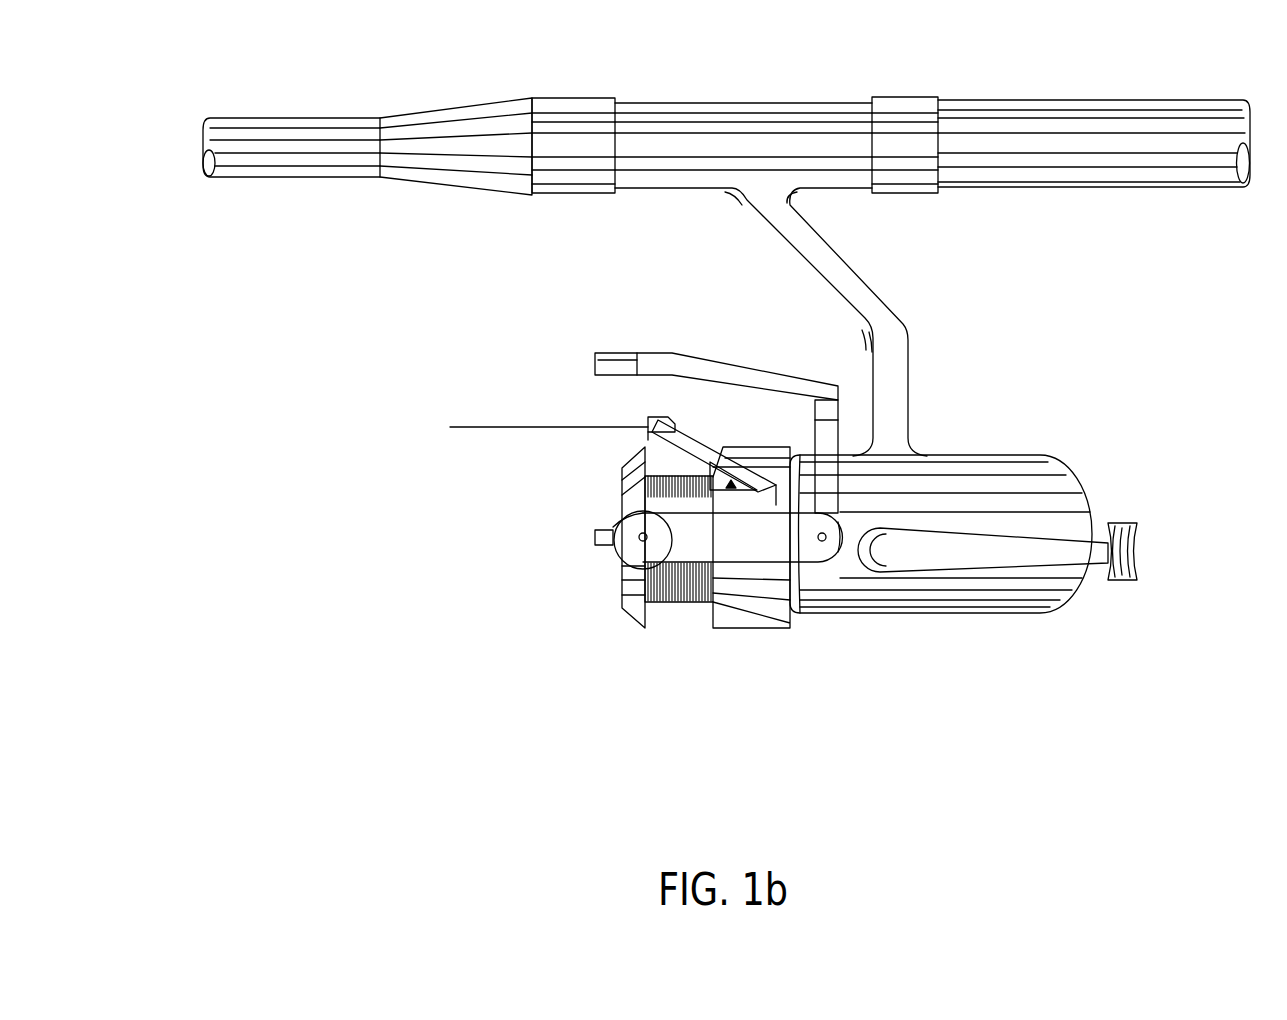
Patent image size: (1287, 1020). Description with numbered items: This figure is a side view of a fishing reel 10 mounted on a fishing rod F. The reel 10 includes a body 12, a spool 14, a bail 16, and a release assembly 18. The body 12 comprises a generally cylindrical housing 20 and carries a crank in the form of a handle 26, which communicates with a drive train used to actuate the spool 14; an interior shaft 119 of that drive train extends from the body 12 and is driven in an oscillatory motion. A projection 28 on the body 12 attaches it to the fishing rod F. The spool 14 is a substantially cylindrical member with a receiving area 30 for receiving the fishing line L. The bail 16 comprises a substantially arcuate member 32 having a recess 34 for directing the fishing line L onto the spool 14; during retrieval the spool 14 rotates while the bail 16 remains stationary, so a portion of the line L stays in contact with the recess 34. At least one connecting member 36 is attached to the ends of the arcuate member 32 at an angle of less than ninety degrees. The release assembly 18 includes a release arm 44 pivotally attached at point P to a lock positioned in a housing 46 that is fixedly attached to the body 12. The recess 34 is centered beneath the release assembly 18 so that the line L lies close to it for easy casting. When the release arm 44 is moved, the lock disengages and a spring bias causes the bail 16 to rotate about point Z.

The fishing rod F is at (1078, 100).
The fishing line L is at (512, 423).
The pivot point P is at (825, 548).
The rotation point Z is at (642, 540).
The fishing reel 10 is at (1100, 408).
The body 12 is at (945, 488).
The spool 14 is at (735, 630).
The bail 16 is at (648, 430).
The release assembly 18 is at (598, 365).
The housing 20 is at (915, 615).
The handle 26 is at (965, 568).
The projection 28 is at (693, 182).
The receiving area 30 is at (675, 602).
The arcuate member 32 is at (723, 452).
The recess 34 is at (648, 424).
The connecting member 36 is at (600, 490).
The release arm 44 is at (755, 382).
The housing 46 is at (737, 562).
The interior shaft 119 is at (593, 543).